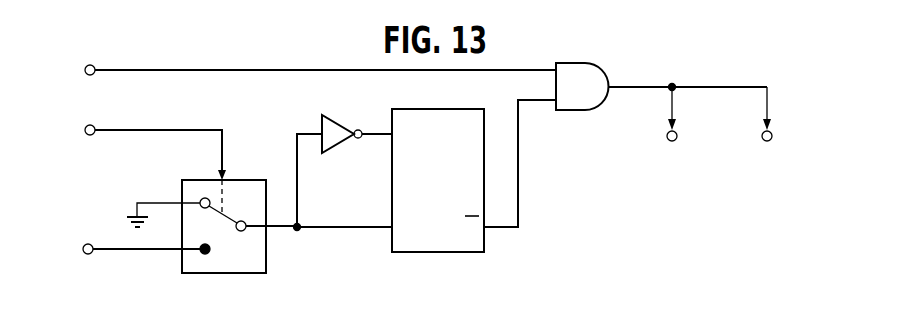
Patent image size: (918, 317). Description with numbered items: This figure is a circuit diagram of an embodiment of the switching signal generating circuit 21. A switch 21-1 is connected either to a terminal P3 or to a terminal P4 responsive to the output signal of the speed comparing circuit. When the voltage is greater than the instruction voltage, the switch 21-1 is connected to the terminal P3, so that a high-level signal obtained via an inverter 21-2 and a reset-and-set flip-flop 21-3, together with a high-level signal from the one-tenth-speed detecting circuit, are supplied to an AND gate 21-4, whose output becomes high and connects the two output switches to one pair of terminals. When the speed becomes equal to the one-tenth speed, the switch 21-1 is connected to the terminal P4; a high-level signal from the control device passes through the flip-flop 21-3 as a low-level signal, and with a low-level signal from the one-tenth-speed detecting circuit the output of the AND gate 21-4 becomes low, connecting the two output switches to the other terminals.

The switching signal generating circuit 21 is at (253, 41).
The switch 21-1 is at (242, 178).
The inverter 21-2 is at (341, 115).
The reset-and-set flip-flop 21-3 is at (420, 108).
The AND gate 21-4 is at (591, 62).
The terminal P3 is at (204, 197).
The terminal P4 is at (205, 274).